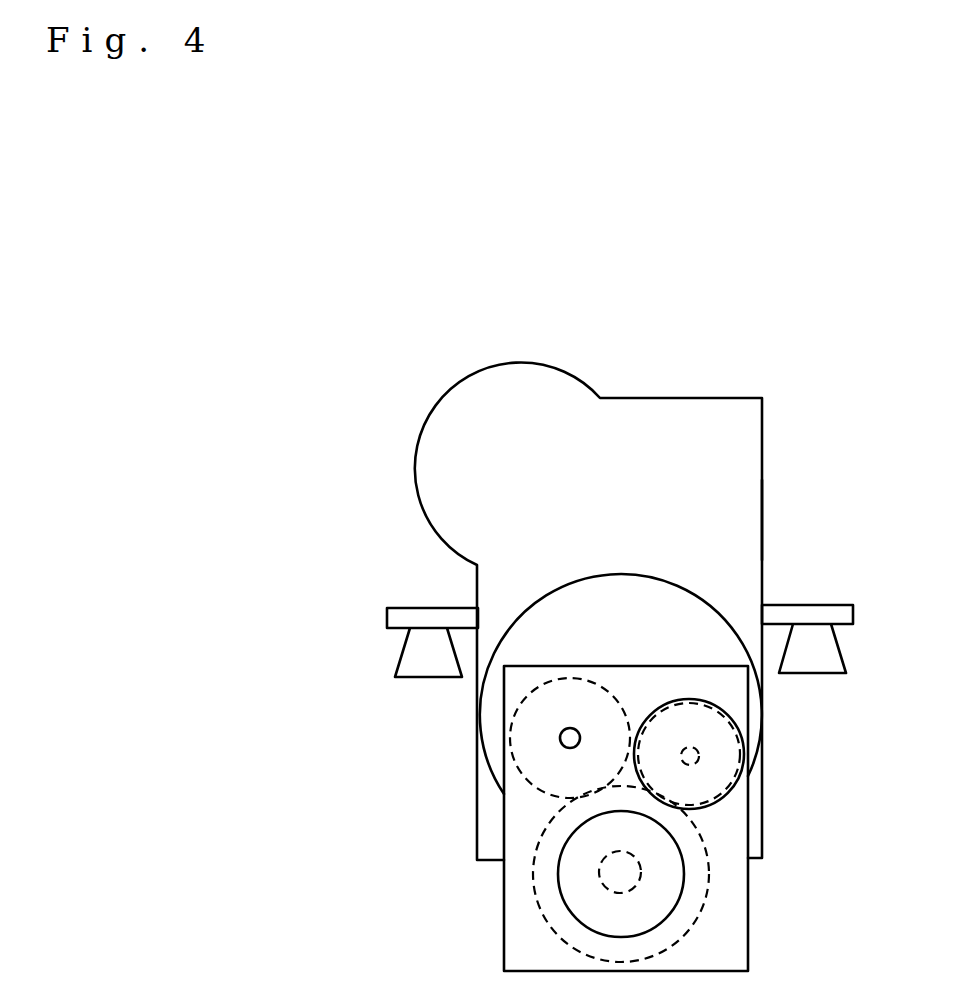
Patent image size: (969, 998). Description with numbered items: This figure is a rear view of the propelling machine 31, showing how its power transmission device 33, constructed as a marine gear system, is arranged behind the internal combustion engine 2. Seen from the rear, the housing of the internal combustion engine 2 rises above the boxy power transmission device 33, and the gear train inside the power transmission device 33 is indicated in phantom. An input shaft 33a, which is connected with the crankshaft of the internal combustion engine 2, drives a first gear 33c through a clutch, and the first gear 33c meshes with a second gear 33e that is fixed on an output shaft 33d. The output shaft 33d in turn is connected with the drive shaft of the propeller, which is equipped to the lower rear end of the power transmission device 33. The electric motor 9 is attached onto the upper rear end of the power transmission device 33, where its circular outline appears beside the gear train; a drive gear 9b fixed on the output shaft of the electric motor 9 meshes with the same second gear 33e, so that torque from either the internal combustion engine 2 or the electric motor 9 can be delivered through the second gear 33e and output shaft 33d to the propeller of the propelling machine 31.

The internal combustion engine 2 is at (745, 522).
The electric motor 9 is at (708, 703).
The drive gear 9b is at (737, 786).
The propelling machine 31 is at (386, 497).
The power transmission device 33 is at (503, 912).
The input shaft 33a is at (562, 741).
The first gear 33c is at (540, 788).
The output shaft 33d is at (630, 888).
The second gear 33e is at (704, 845).